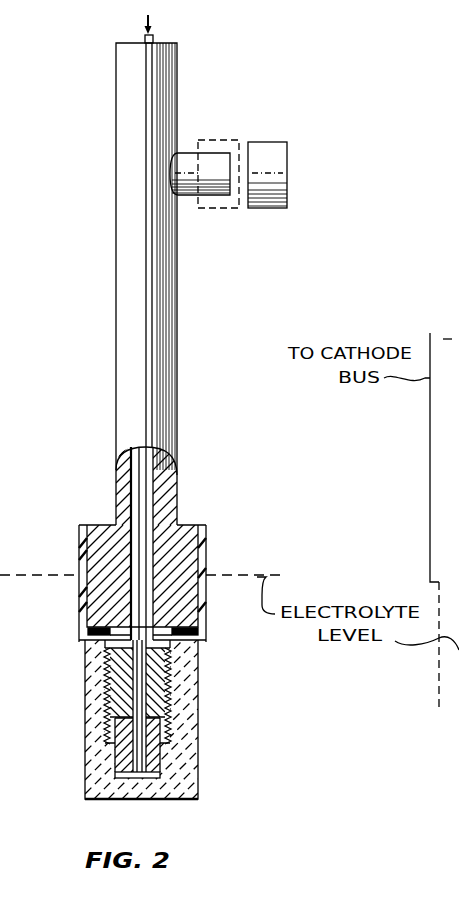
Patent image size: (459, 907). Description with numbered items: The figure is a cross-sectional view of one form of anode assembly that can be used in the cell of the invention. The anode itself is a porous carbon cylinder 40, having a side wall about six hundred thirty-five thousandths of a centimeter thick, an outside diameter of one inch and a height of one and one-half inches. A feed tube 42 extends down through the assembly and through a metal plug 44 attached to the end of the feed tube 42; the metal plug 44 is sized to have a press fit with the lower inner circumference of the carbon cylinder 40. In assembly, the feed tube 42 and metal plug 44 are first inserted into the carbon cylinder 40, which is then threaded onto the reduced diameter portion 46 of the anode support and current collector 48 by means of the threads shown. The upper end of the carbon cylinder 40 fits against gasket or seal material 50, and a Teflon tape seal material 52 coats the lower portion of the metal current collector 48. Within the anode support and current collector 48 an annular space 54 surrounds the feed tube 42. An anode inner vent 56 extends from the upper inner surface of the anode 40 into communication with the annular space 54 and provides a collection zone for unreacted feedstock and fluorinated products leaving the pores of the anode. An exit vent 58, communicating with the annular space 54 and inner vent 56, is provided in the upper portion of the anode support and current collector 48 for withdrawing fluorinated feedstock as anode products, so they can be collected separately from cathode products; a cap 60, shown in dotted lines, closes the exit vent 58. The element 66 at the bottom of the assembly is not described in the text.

The porous carbon cylinder 40 is at (198, 768).
The feed tube 42 is at (153, 37).
The metal plug 44 is at (115, 765).
The reduced diameter portion 46 is at (112, 693).
The anode support and current collector 48 is at (117, 272).
The gasket or seal material 50 is at (180, 627).
The Teflon tape seal material 52 is at (79, 548).
The annular space 54 is at (152, 479).
The anode inner vent 56 is at (118, 645).
The exit vent 58 is at (186, 197).
The cap 60 is at (287, 155).
The contact plate 66 is at (152, 775).